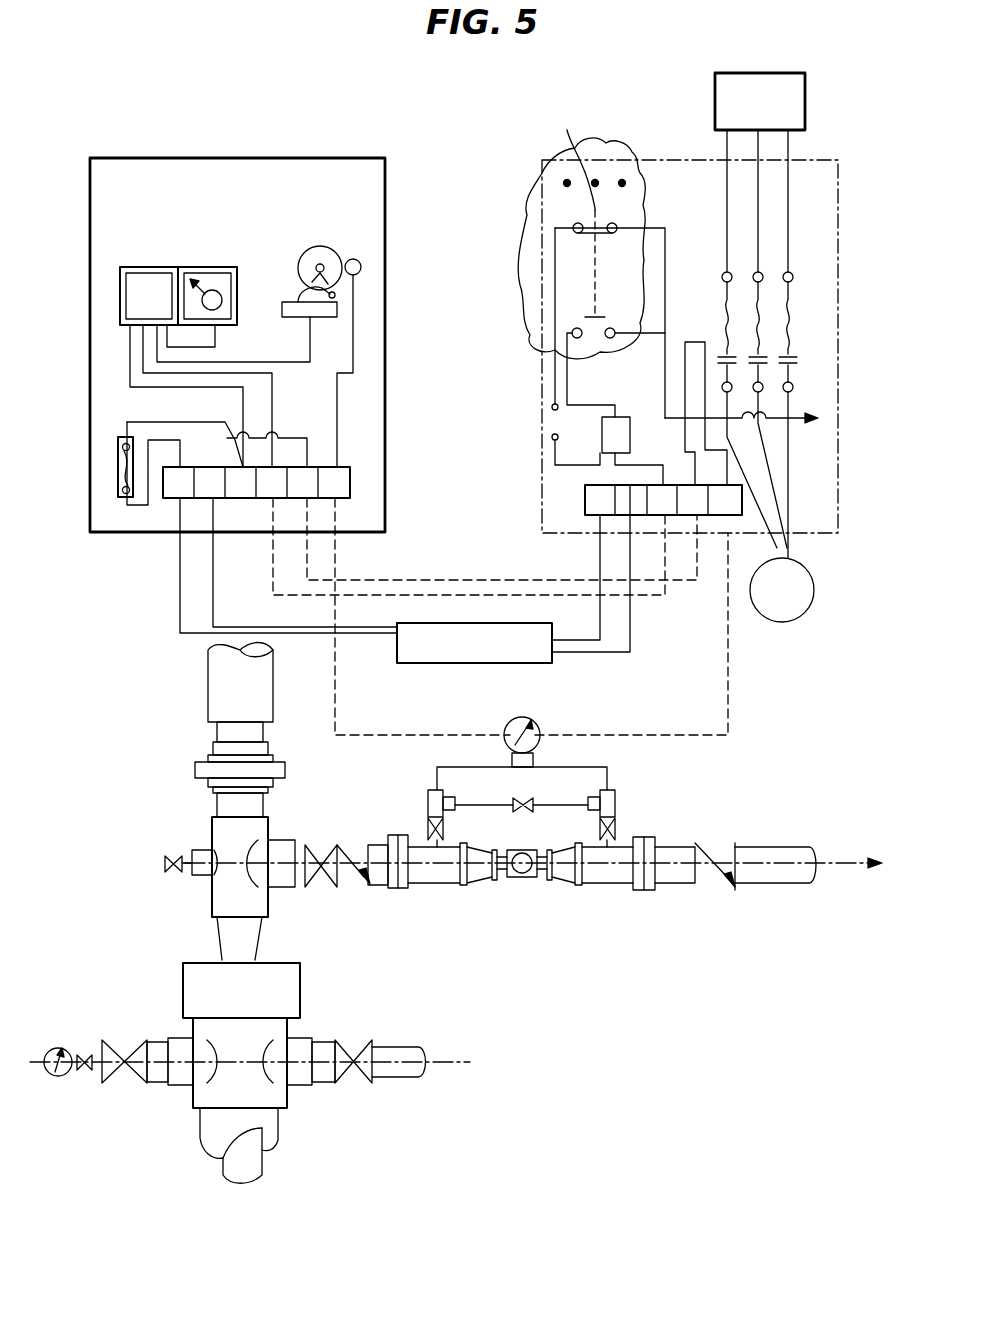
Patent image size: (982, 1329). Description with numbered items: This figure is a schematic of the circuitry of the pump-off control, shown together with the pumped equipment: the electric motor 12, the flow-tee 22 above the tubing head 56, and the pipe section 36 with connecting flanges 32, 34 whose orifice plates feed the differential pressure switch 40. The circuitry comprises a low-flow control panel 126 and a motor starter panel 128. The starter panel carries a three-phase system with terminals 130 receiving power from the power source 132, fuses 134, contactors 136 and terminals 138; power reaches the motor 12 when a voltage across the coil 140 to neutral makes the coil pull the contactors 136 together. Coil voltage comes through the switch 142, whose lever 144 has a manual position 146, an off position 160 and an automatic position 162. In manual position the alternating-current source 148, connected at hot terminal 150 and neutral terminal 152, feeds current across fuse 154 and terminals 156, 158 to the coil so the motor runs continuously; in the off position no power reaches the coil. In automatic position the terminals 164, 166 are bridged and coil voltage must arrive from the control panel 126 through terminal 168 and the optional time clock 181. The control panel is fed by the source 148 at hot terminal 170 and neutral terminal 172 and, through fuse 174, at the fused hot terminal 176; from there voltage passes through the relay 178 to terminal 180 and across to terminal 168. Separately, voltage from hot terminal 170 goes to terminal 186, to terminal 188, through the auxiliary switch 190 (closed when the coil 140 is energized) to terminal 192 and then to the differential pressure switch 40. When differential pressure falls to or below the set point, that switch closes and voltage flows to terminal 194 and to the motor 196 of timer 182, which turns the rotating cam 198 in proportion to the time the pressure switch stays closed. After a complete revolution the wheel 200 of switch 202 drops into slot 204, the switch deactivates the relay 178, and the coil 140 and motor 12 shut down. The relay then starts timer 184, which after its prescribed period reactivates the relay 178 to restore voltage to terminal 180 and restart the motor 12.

The electric motor 12 is at (808, 606).
The flow-tee 22 is at (270, 828).
The connecting flange 32 is at (398, 888).
The connecting flange 34 is at (642, 890).
The pipe section 36 is at (482, 885).
The differential pressure switch 40 is at (533, 717).
The tubing head 56 is at (192, 1023).
The low-flow control panel 126 is at (385, 180).
The motor starter panel 128 is at (838, 175).
The terminals 130 is at (794, 278).
The power source 132 is at (770, 73).
The fuses 134 is at (795, 322).
The contactors 136 is at (798, 360).
The terminals 138 is at (798, 390).
The coil 140 is at (766, 426).
The switch 142 is at (606, 150).
The switch lever 144 is at (570, 156).
The manual position 146 is at (564, 184).
The source 148 is at (433, 663).
The hot terminal 150 is at (585, 500).
The neutral terminal 152 is at (637, 515).
The fuse 154 is at (553, 420).
The terminal 156 is at (573, 231).
The terminal 158 is at (607, 233).
The off position 160 is at (598, 182).
The automatic position 162 is at (625, 183).
The terminal 164 is at (566, 334).
The terminal 166 is at (606, 338).
The terminal 168 is at (668, 515).
The hot terminal 170 is at (168, 498).
The neutral terminal 172 is at (203, 498).
The fuse 174 is at (118, 470).
The fused hot terminal 176 is at (243, 498).
The relay 178 is at (120, 297).
The terminal 180 is at (287, 498).
The time clock 181 is at (600, 442).
The timer 182 is at (330, 248).
The timer 184 is at (207, 267).
The terminal 186 is at (310, 467).
The terminal 188 is at (705, 515).
The auxiliary switch 190 is at (705, 342).
The terminal 192 is at (806, 580).
The terminal 194 is at (350, 483).
The motor 196 is at (362, 267).
The rotating cam 198 is at (338, 262).
The wheel 200 is at (336, 296).
The switch 202 is at (337, 313).
The slot 204 is at (302, 298).